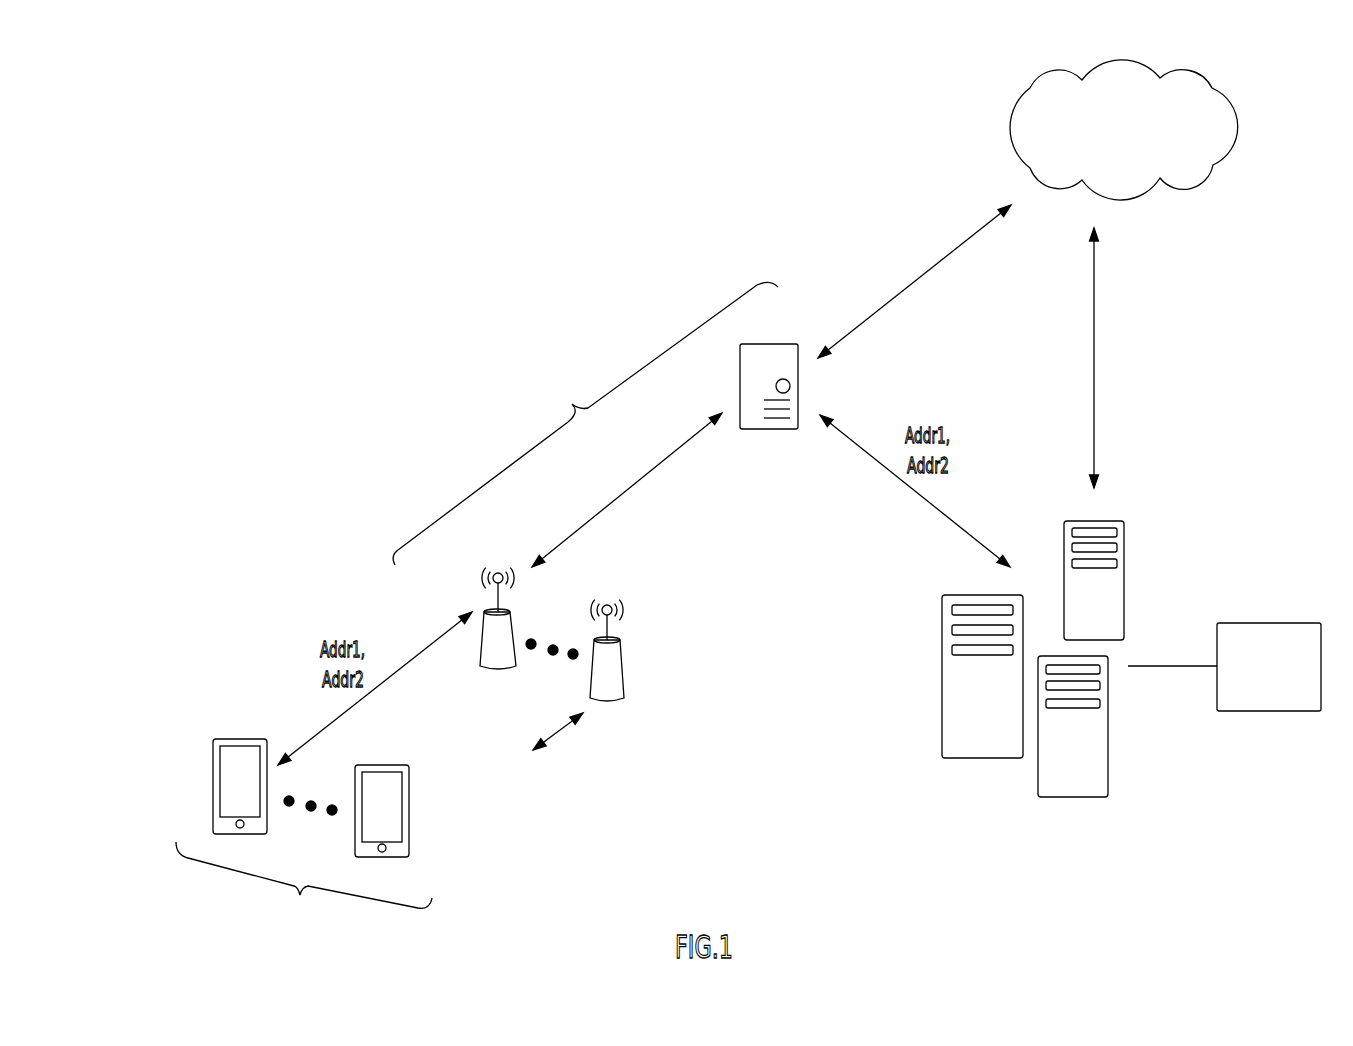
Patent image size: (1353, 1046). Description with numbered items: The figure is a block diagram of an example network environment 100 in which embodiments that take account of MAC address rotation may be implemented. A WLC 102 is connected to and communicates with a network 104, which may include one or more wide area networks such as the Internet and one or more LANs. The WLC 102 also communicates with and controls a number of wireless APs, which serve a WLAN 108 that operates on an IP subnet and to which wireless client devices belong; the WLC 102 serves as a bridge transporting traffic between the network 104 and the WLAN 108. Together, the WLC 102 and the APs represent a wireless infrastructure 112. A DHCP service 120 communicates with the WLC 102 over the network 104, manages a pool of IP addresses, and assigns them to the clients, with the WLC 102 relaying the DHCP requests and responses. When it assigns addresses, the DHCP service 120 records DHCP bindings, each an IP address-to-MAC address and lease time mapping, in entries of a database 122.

The network environment 100 is at (490, 235).
The WLC 102 is at (740, 388).
The network 104 is at (1036, 84).
The WLAN 108 is at (304, 901).
The wireless infrastructure 112 is at (585, 423).
The DHCP service 120 is at (1033, 709).
The database 122 is at (1290, 712).